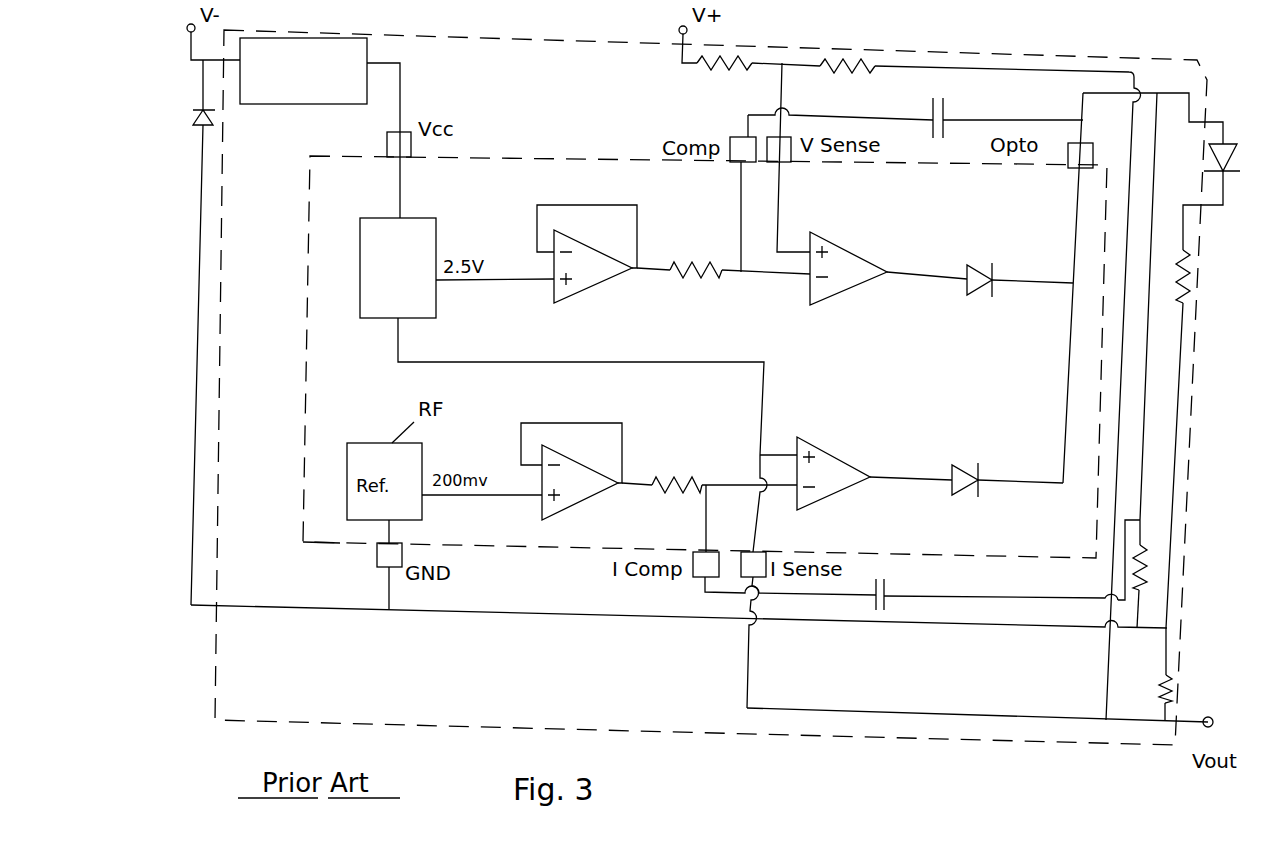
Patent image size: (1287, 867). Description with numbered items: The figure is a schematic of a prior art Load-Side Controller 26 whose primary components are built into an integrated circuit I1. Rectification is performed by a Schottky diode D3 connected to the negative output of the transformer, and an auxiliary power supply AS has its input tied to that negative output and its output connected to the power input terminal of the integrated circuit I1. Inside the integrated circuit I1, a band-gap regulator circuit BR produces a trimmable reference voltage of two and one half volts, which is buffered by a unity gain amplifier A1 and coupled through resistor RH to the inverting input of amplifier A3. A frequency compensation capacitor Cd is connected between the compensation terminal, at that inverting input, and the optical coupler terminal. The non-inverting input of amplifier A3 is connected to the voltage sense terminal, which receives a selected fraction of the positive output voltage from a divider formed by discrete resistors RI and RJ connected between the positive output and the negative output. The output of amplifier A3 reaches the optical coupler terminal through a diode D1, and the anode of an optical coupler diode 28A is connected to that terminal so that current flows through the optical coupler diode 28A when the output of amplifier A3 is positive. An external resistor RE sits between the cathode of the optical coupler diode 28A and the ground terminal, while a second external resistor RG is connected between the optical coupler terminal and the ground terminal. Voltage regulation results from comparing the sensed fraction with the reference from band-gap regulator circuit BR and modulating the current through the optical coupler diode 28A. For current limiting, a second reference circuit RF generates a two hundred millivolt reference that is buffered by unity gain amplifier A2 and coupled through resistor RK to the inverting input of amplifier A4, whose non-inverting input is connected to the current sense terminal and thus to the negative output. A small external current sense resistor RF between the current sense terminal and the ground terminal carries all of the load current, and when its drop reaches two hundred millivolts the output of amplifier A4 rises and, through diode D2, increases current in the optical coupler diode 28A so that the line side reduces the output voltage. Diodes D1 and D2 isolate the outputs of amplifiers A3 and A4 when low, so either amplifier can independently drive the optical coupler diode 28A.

The Load-Side Controller 26 is at (218, 445).
The optical coupler diode 28A is at (1233, 135).
The Schottky diode D3 is at (205, 132).
The auxiliary power supply AS is at (303, 103).
The band-gap regulator circuit BR is at (420, 216).
The amplifier A1 is at (598, 287).
The resistor RH is at (692, 258).
The frequency compensation capacitor Cd is at (948, 108).
The discrete resistor RI is at (735, 78).
The discrete resistor RJ is at (848, 84).
The external discrete resistor RE is at (1188, 293).
The current sense resistor RF is at (1160, 678).
The external resistor RG is at (1158, 566).
The voltage regulating amplifier A3 is at (850, 248).
The diode D1 is at (1010, 237).
The current limiting amplifier A4 is at (845, 458).
The diode D2 is at (992, 437).
The integrated circuit I1 is at (341, 548).
The amplifier A2 is at (588, 490).
The resistor RK is at (685, 470).
The compensation capacitor Cc is at (890, 612).